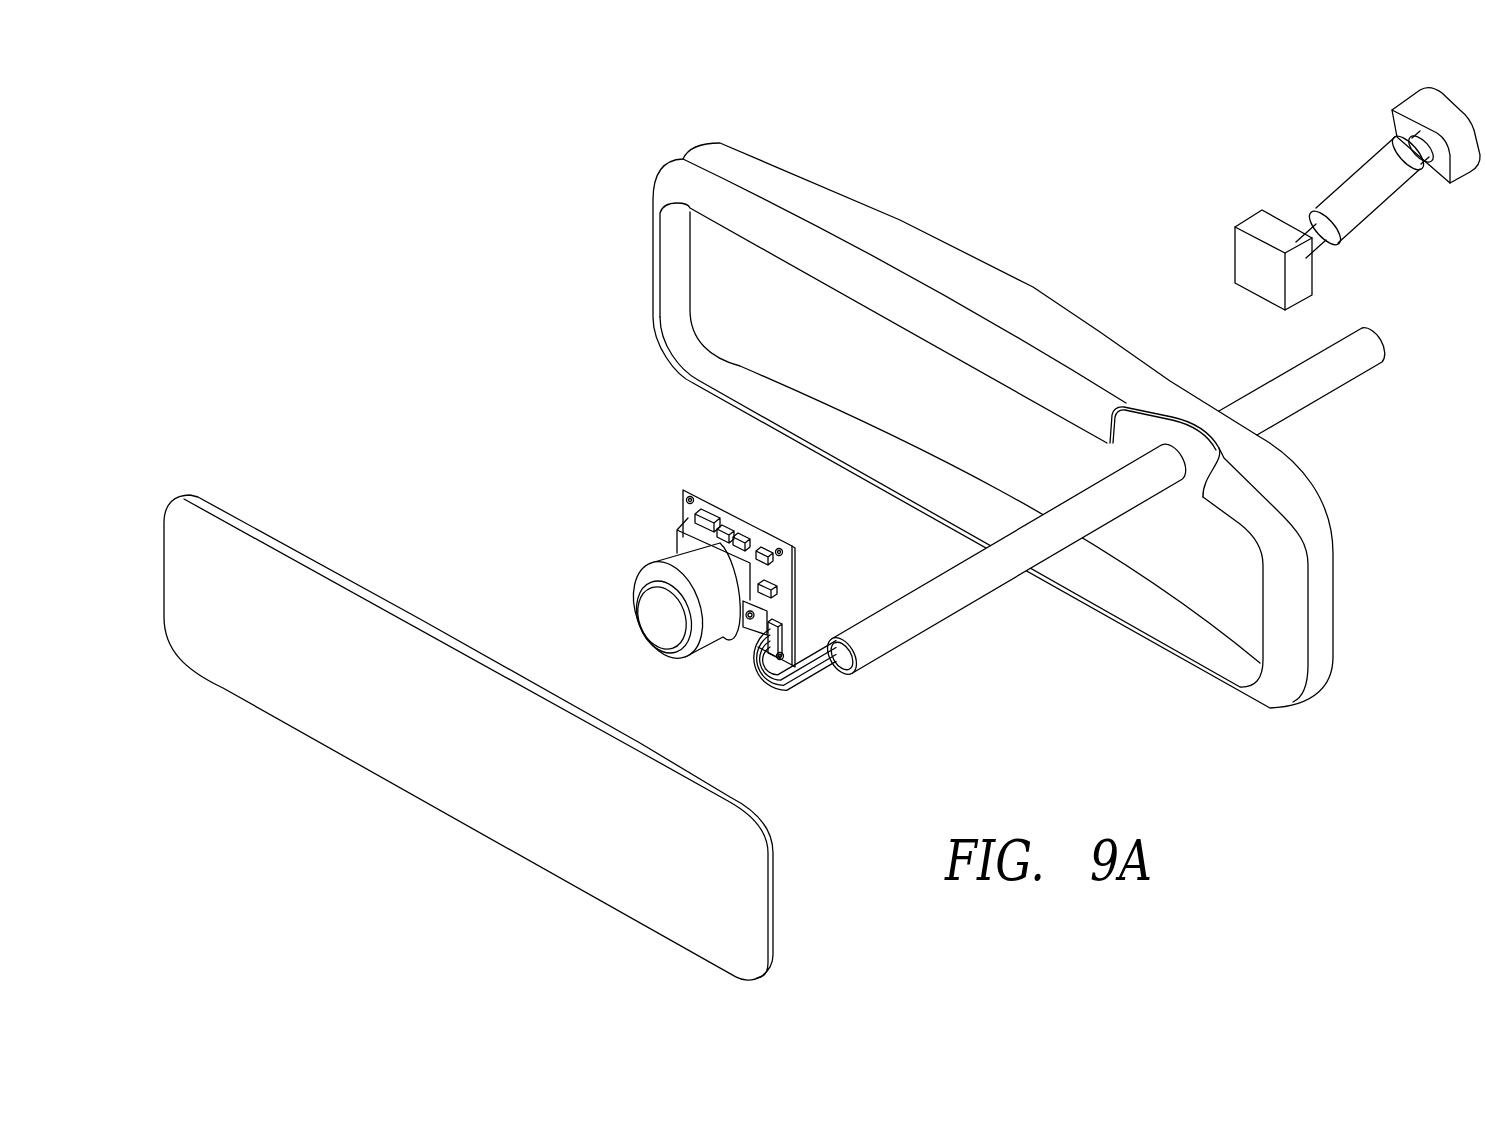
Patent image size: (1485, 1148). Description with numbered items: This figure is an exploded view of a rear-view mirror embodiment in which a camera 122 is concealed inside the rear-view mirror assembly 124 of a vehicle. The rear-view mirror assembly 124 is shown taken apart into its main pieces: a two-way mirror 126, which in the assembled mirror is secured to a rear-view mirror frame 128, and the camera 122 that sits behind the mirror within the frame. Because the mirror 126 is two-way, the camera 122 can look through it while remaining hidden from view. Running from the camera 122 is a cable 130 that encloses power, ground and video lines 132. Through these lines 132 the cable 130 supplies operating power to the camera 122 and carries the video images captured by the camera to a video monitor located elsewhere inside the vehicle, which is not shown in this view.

The camera 122 is at (657, 542).
The rear-view mirror assembly 124 is at (466, 379).
The two-way mirror 126 is at (469, 799).
The rear-view mirror frame 128 is at (860, 224).
The cable 130 is at (907, 622).
The power, ground and video lines 132 is at (737, 660).